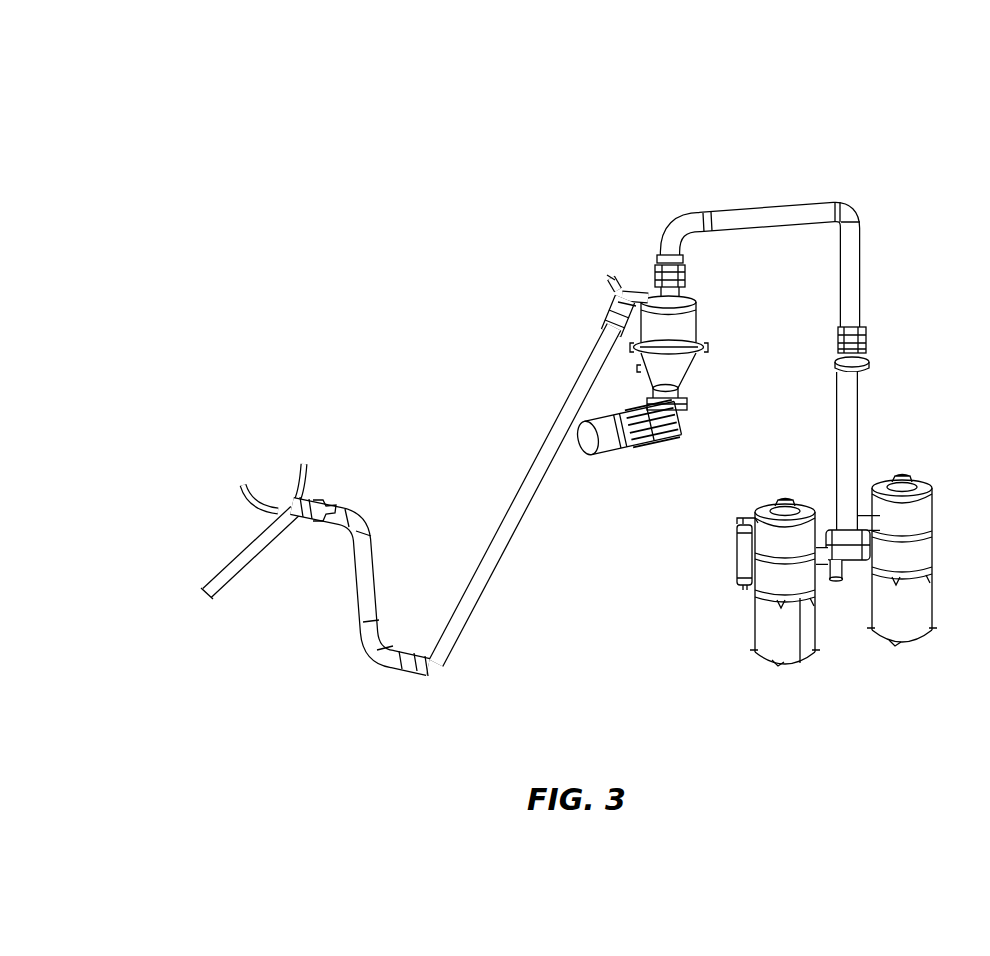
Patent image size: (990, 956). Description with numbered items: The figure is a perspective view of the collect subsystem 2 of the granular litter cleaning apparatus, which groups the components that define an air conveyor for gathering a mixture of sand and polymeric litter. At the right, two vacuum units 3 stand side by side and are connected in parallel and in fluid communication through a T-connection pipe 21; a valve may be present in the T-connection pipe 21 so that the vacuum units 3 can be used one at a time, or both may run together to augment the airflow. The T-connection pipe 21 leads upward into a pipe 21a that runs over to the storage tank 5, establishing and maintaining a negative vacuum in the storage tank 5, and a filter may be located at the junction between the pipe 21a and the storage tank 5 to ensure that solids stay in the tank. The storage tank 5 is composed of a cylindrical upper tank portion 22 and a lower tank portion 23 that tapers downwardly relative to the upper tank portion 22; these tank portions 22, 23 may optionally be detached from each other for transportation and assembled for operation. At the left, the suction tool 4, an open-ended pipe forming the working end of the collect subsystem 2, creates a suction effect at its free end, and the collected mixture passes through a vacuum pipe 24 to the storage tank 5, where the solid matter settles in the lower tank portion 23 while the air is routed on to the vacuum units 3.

The collect subsystem 2 is at (683, 165).
The vacuum unit 3 is at (782, 623).
The suction tool 4 is at (247, 553).
The storage tank 5 is at (722, 322).
The T-connection pipe 21 is at (861, 500).
The pipe 21a is at (848, 300).
The upper tank portion 22 is at (677, 323).
The lower tank portion 23 is at (667, 373).
The vacuum pipe 24 is at (525, 483).